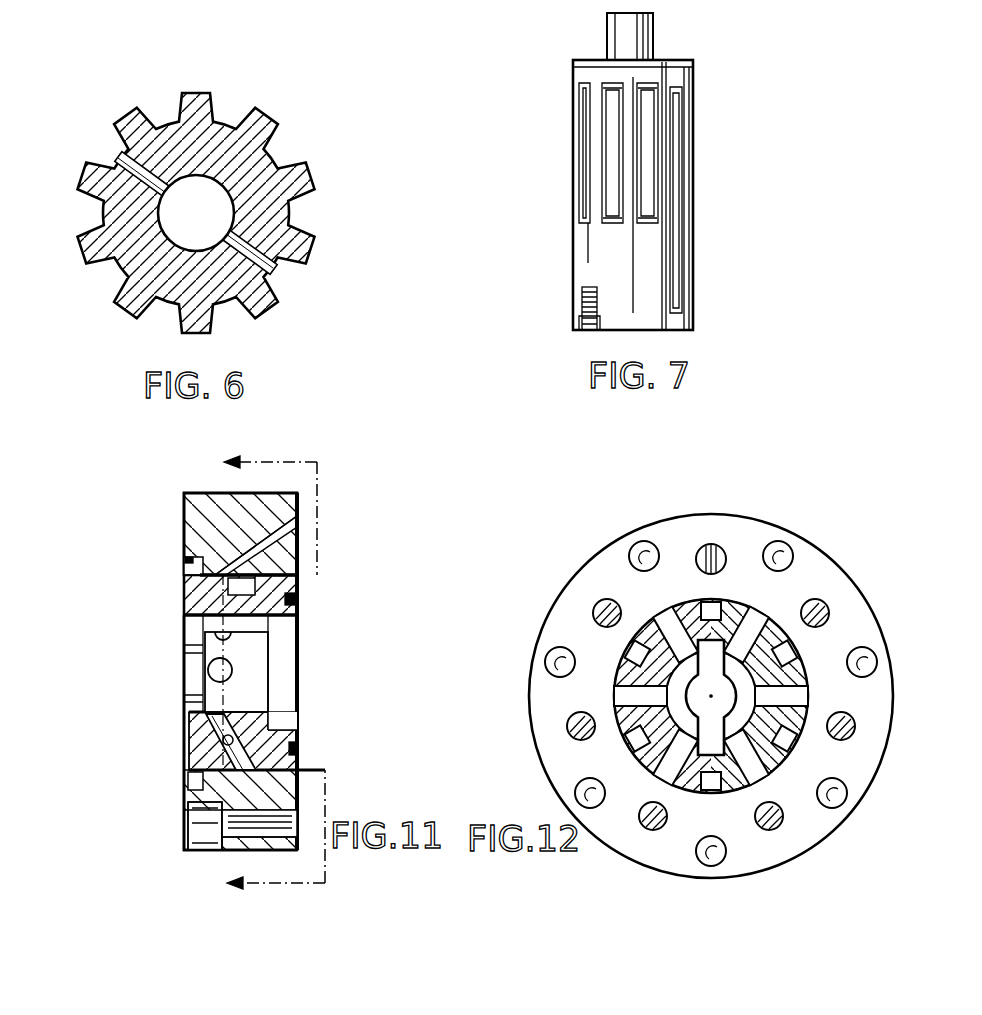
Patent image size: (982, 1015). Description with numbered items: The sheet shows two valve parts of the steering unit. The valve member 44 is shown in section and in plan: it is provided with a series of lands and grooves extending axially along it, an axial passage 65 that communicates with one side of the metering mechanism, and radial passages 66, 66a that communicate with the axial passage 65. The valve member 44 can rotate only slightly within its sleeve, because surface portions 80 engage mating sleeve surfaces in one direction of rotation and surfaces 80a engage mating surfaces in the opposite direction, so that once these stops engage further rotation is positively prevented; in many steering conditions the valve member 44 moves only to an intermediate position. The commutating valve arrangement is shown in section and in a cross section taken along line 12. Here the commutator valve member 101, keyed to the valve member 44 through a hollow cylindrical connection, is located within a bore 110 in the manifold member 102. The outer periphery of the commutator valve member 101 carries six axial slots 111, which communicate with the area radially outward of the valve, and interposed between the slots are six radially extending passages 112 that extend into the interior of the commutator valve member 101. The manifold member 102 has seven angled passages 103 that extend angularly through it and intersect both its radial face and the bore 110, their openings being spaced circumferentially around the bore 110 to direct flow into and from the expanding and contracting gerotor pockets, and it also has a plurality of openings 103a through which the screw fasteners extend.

In FIG. 6, the valve member 44 is at (316, 152).
In FIG. 7, the valve member 44 is at (686, 150).
In FIG. 6, the axial passage 65 is at (166, 237).
In FIG. 6, the radial passage 66 is at (272, 262).
In FIG. 6, the radial passage 66a is at (120, 165).
In FIG. 7, the surface portions 80 is at (654, 40).
In FIG. 7, the surface portions 80a is at (607, 40).
In FIG. 11, the commutator valve member 101 is at (298, 600).
In FIG. 12, the commutator valve member 101 is at (667, 537).
In FIG. 11, the manifold member 102 is at (217, 503).
In FIG. 12, the manifold member 102 is at (735, 528).
In FIG. 11, the angled passages 103 is at (270, 556).
In FIG. 12, the angled passages 103 is at (709, 545).
In FIG. 11, the openings 103a is at (212, 825).
In FIG. 12, the openings 103a is at (632, 548).
In FIG. 11, the bore 110 is at (200, 573).
In FIG. 11, the axial slots 111 is at (198, 592).
In FIG. 12, the axial slots 111 is at (705, 598).
In FIG. 11, the radially extending passages 112 is at (233, 663).
In FIG. 12, the radially extending passages 112 is at (673, 618).
In FIG. 11, the section line 12— 12 is at (256, 672).